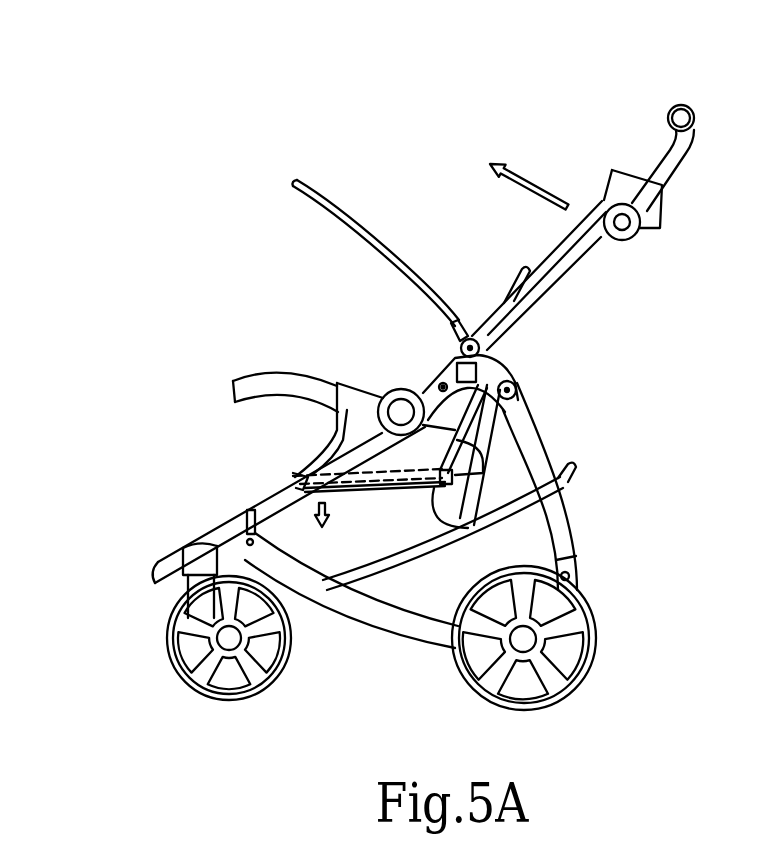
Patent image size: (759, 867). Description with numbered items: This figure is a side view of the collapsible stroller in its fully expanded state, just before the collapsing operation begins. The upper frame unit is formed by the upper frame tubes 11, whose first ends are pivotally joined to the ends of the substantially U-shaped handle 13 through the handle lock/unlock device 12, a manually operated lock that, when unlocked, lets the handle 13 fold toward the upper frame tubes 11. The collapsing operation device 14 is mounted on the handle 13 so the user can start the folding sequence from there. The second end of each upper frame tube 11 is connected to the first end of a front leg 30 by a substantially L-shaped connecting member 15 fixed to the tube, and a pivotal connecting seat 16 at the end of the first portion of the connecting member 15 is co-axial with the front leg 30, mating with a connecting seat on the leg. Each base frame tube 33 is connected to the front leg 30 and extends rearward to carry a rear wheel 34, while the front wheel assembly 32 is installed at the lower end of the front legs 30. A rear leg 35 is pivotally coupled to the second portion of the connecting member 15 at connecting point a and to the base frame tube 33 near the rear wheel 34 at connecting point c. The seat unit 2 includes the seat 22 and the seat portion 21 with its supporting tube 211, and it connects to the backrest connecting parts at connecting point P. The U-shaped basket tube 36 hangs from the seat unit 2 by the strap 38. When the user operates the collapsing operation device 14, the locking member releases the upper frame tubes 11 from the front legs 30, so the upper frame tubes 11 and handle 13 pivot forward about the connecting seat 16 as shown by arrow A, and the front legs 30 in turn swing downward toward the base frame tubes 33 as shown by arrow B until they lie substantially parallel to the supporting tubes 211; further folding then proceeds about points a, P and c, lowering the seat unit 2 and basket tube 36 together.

The upper frame tube 11 is at (548, 292).
The handle lock/unlock device 12 is at (634, 233).
The handle 13 is at (684, 166).
The collapsing operation device 14 is at (689, 103).
The connecting member 15 is at (441, 383).
The connecting seat 16 is at (399, 390).
The seat unit 2 is at (336, 390).
The seat portion 21 is at (388, 490).
The supporting tube 211 is at (290, 472).
The seat 22 is at (247, 383).
The front leg 30 is at (264, 499).
The front wheel assembly 32 is at (178, 670).
The base frame tube 33 is at (387, 624).
The rear wheel 34 is at (596, 658).
The rear leg 35 is at (572, 532).
The U-shaped basket tube 36 is at (536, 493).
The strap 38 is at (478, 466).
The connecting point a is at (517, 387).
The connecting point c is at (571, 576).
The connecting point P is at (450, 488).
The arrow A is at (529, 178).
The arrow B is at (332, 509).